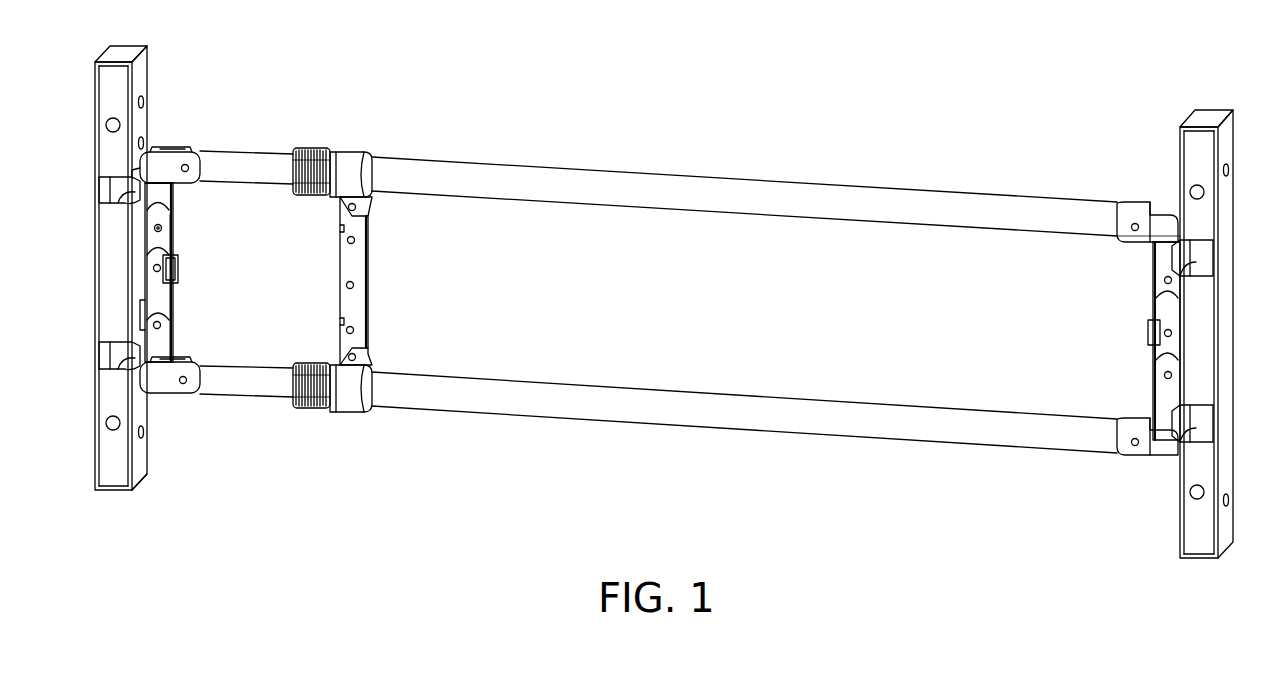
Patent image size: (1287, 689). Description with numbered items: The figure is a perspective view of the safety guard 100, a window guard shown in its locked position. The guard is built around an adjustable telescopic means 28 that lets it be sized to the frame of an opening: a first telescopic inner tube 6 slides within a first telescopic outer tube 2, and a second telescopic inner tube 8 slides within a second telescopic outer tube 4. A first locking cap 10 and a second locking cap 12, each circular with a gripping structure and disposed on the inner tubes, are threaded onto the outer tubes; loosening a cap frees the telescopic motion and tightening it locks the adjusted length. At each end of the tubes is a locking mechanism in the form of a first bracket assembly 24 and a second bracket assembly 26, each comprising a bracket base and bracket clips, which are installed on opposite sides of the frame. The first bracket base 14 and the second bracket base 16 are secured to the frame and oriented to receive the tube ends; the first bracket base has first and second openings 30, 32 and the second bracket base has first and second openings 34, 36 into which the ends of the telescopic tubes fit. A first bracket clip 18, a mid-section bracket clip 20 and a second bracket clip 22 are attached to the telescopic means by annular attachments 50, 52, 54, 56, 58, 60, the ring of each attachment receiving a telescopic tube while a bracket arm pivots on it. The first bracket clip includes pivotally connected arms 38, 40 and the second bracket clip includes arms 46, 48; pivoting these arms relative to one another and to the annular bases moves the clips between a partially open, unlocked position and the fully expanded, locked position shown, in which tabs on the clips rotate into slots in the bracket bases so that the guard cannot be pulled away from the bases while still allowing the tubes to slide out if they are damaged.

The safety guard 100 is at (1078, 640).
The first telescopic outer tube 2 is at (637, 185).
The second telescopic outer tube 4 is at (633, 415).
The first telescopic inner tube 6 is at (248, 160).
The second telescopic inner tube 8 is at (243, 388).
The first locking cap 10 is at (312, 160).
The second locking cap 12 is at (305, 410).
The first bracket base 14 is at (1195, 150).
The second bracket base 16 is at (118, 82).
The first bracket clip 18 is at (1128, 255).
The mid-section bracket clip 20 is at (383, 215).
The second bracket clip 22 is at (190, 203).
The first bracket assembly 24 is at (1243, 568).
The second bracket assembly 26 is at (212, 498).
The adjustable telescopic means 28 is at (777, 170).
The first opening in the first bracket base 30 is at (1200, 256).
The second opening in the first bracket base 32 is at (1200, 413).
The first opening in the second bracket base 34 is at (118, 190).
The second opening in the second bracket base 36 is at (118, 350).
The arm 38 is at (1170, 305).
The arm 40 is at (1170, 370).
The arm 46 is at (160, 203).
The arm 48 is at (150, 313).
The annular attachment 50 is at (1130, 205).
The annular attachment 52 is at (1118, 458).
The annular attachment 54 is at (352, 165).
The annular attachment 56 is at (350, 398).
The annular attachment 58 is at (192, 150).
The annular attachment 60 is at (193, 395).